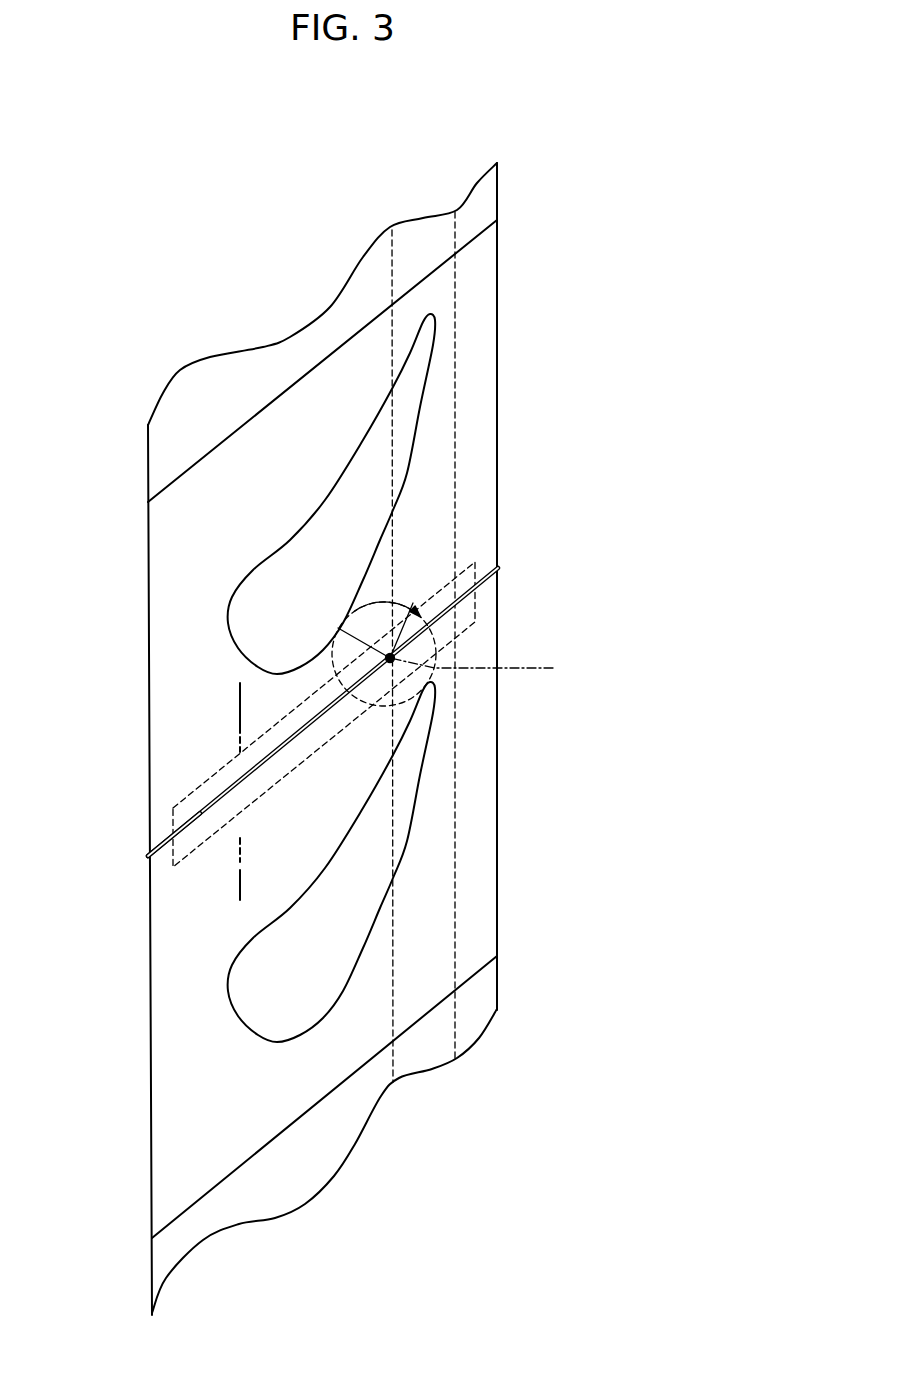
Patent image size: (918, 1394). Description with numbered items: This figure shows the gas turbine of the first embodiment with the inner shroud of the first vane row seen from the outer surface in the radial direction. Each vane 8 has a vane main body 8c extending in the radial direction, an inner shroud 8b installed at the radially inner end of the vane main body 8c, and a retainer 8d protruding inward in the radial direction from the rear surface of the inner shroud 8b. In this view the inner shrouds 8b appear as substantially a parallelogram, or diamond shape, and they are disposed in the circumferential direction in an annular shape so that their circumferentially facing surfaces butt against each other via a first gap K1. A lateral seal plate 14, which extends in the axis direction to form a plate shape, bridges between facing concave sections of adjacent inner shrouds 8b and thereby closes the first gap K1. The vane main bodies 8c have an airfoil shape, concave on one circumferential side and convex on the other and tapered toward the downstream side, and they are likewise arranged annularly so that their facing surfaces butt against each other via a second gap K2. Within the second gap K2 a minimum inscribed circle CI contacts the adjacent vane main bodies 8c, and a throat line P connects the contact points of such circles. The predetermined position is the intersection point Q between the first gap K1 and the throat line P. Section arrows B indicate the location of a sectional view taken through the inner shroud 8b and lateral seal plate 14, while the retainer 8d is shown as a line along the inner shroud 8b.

The vane 8 is at (547, 201).
The inner shroud 8b is at (158, 447).
The vane main body 8c is at (423, 348).
The retainer 8d is at (454, 904).
The lateral seal plate 14 is at (173, 812).
The first gap K1 is at (140, 856).
The second gap K2 is at (253, 771).
The section line B is at (230, 716).
The throat line P is at (440, 632).
The intersection point Q is at (413, 603).
The minimum inscribed circle CI is at (484, 666).